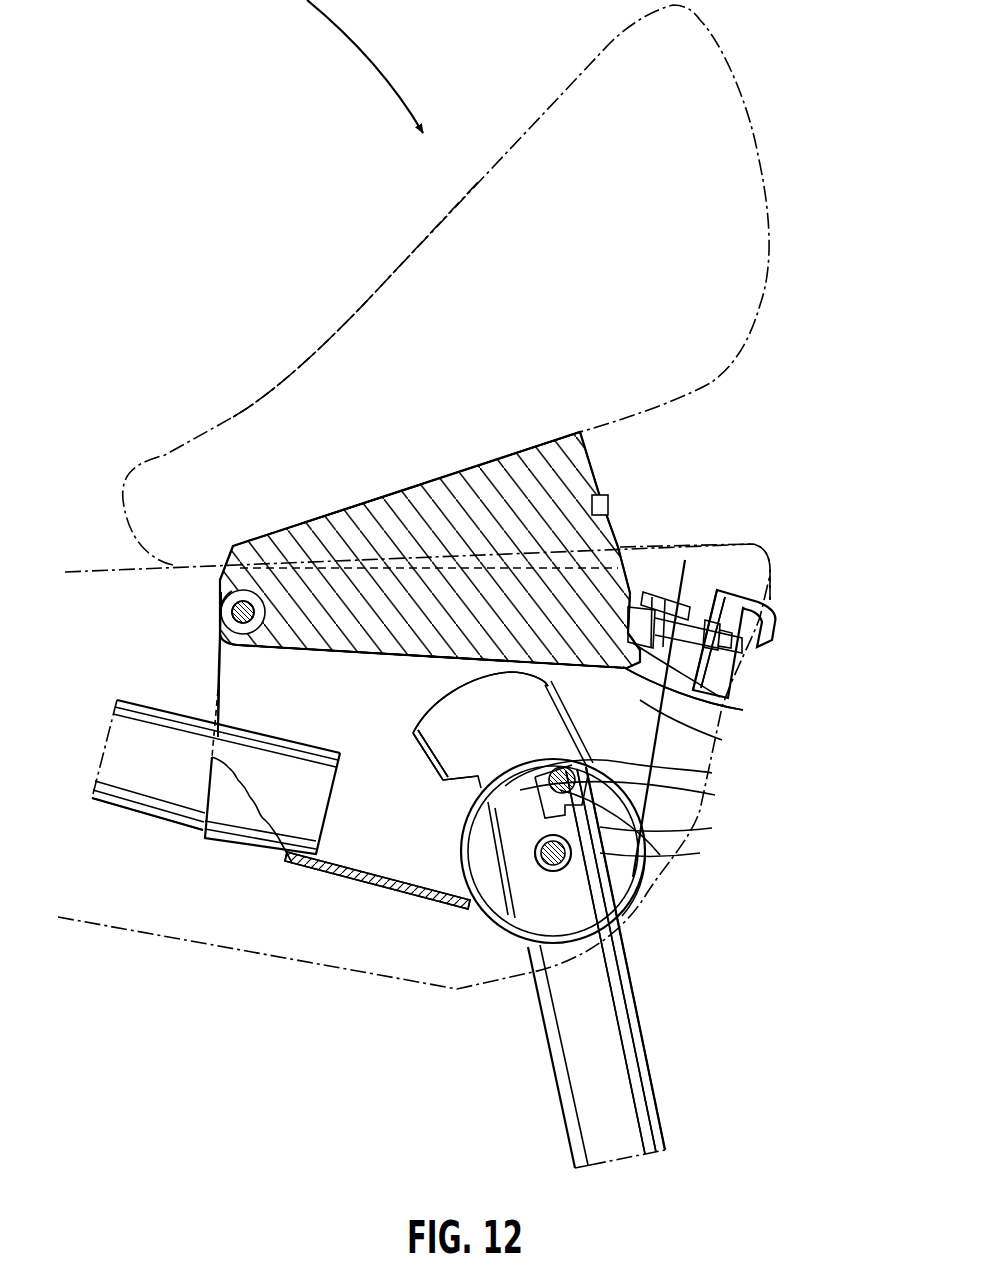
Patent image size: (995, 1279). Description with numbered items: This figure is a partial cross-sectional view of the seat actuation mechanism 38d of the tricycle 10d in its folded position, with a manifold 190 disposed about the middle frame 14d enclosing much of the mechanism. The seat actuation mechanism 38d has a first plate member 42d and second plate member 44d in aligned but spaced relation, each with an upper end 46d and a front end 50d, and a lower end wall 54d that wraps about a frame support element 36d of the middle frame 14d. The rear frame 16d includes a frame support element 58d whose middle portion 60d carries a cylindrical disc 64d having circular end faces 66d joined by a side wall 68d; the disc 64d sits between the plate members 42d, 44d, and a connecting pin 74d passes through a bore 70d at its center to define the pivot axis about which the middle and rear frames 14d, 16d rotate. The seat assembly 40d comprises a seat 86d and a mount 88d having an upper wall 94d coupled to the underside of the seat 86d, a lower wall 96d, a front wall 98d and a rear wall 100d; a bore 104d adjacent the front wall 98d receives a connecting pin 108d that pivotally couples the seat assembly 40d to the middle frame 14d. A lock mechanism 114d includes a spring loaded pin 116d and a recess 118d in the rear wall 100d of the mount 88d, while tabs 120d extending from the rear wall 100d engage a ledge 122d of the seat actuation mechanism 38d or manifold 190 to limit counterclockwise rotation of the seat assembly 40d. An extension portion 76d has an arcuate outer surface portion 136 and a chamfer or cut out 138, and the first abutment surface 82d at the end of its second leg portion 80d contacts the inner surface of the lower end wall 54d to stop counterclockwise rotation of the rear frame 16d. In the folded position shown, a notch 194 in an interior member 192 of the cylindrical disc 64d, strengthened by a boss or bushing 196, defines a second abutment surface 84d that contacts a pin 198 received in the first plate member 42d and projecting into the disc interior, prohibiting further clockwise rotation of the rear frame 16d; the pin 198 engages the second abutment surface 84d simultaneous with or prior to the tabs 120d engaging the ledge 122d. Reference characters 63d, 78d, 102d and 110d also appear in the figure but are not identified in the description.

The tricycle 10d is at (158, 312).
The middle frame 14d is at (148, 817).
The rear frame 16d is at (545, 1040).
The frame support element 36d is at (130, 705).
The seat actuation mechanism 38d is at (218, 673).
The seat assembly 40d is at (375, 289).
The first plate member 42d is at (223, 778).
The second plate member 44d is at (273, 708).
The upper end 46d is at (347, 560).
The front end 50d is at (217, 688).
The lower end wall 54d is at (290, 857).
The frame support element 58d is at (637, 1087).
The middle portion 60d is at (623, 933).
The lever 63d is at (643, 908).
The cylindrical disc 64d is at (645, 875).
The circular end faces 66d is at (593, 910).
The side wall 68d is at (498, 932).
The bore 70d is at (542, 870).
The connecting pin 74d is at (543, 843).
The extension portion 76d is at (415, 725).
The flap surface 78d is at (552, 744).
The second leg portion 80d is at (470, 750).
The first abutment surface 82d is at (425, 767).
The second abutment surface 84d is at (588, 767).
The seat 86d is at (543, 110).
The mount 88d is at (497, 458).
The upper wall 94d is at (397, 493).
The lower wall 96d is at (357, 657).
The front wall 98d is at (218, 603).
The rear wall 100d is at (620, 540).
The pivot bracket 102d is at (198, 622).
The bore 104d is at (248, 605).
The connecting pin 108d is at (241, 605).
The arcuate slot 110d is at (720, 740).
The lock mechanism 114d is at (787, 622).
The spring loaded pin 116d is at (707, 577).
The recess 118d is at (638, 492).
The tabs 120d is at (737, 708).
The ledge 122d is at (730, 678).
The outer surface portion 136 is at (448, 693).
The chamfer or cut out 138 is at (548, 683).
The manifold 190 is at (183, 940).
The interior member 192 is at (700, 853).
The notch 194 is at (710, 802).
The boss or bushing 196 is at (710, 828).
The pin 198 is at (710, 773).